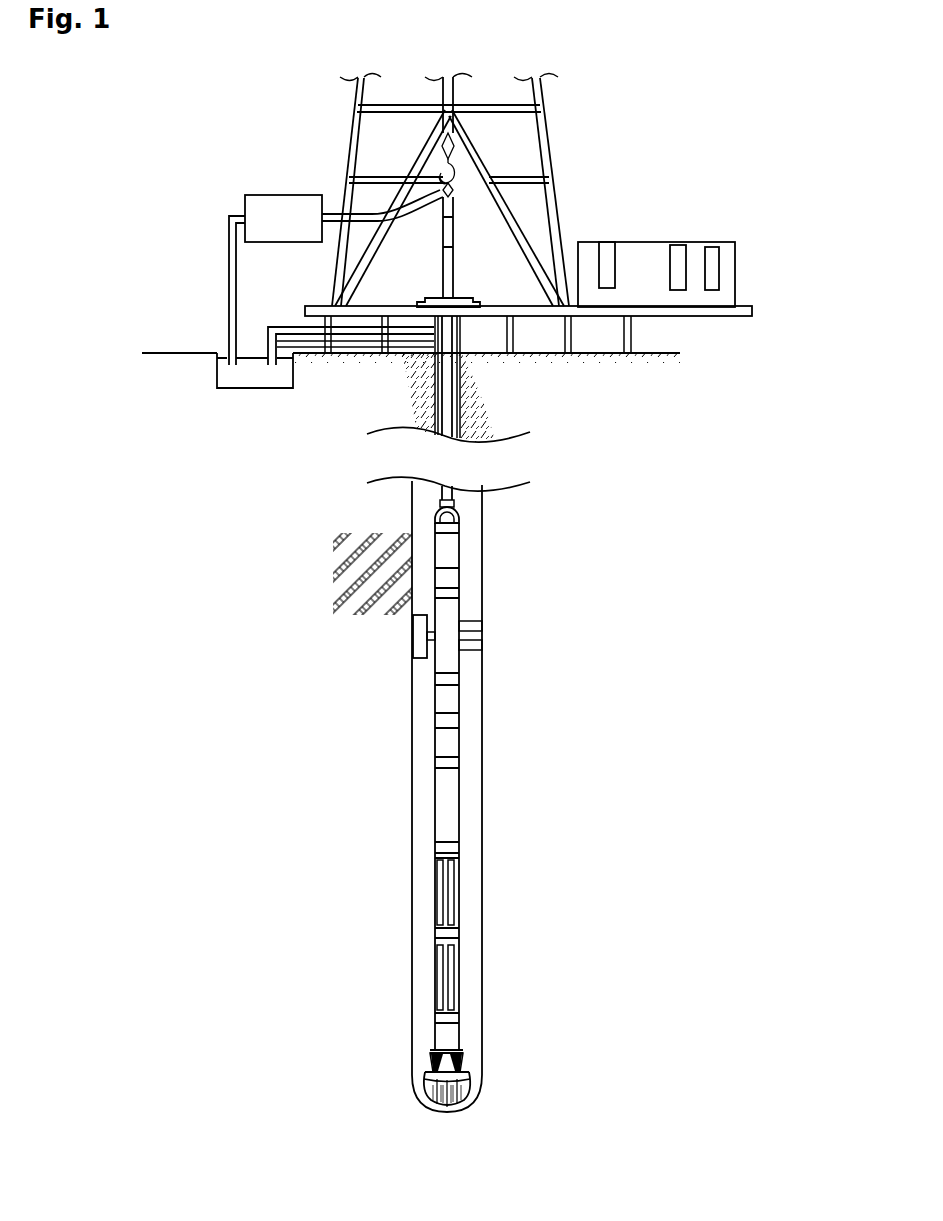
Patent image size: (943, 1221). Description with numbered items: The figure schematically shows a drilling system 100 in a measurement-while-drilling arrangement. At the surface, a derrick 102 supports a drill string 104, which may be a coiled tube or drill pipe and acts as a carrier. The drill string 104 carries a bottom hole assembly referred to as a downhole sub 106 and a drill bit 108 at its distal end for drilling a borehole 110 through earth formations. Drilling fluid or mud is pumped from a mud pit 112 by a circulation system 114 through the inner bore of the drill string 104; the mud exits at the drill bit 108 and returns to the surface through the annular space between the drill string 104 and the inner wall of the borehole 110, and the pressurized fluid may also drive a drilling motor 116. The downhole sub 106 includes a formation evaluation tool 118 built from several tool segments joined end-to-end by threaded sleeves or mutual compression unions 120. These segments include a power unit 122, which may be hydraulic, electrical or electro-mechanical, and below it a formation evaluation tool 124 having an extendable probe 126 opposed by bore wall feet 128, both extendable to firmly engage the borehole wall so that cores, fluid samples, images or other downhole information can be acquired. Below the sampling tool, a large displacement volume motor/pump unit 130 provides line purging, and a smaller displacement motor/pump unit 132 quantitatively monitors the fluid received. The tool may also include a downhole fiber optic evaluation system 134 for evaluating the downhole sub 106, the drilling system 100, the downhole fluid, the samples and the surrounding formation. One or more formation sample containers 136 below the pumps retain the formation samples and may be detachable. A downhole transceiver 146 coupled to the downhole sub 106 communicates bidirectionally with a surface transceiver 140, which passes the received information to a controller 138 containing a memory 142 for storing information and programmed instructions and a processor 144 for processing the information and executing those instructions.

The drilling system 100 is at (560, 110).
The derrick 102 is at (550, 146).
The drill string 104 is at (453, 408).
The downhole sub 106 is at (560, 512).
The drill bit 108 is at (467, 1078).
The borehole 110 is at (412, 693).
The mud pit 112 is at (257, 388).
The circulation system 114 is at (285, 195).
The drilling motor 116 is at (460, 1038).
The formation evaluation tool 118 is at (414, 737).
The mutual compression unions 120 is at (457, 597).
The power unit 122 is at (450, 553).
The formation evaluation tool 124 is at (452, 662).
The extendable probe 126 is at (417, 637).
The bore wall feet 128 is at (478, 626).
The motor/pump unit 130 is at (458, 702).
The motor/pump unit 132 is at (458, 738).
The fiber optic evaluation system 134 is at (447, 805).
The formation sample containers 136 is at (457, 887).
The controller 138 is at (735, 292).
The surface transceiver 140 is at (607, 242).
The memory 142 is at (676, 250).
The processor 144 is at (711, 250).
The downhole transceiver 146 is at (460, 578).